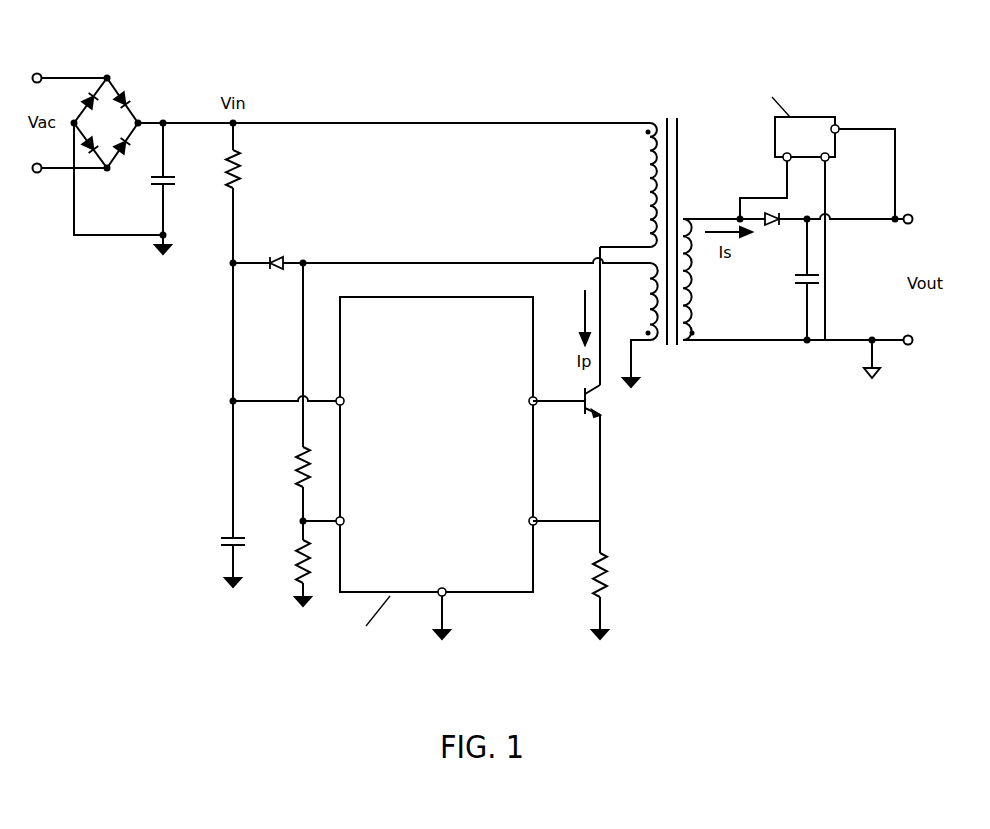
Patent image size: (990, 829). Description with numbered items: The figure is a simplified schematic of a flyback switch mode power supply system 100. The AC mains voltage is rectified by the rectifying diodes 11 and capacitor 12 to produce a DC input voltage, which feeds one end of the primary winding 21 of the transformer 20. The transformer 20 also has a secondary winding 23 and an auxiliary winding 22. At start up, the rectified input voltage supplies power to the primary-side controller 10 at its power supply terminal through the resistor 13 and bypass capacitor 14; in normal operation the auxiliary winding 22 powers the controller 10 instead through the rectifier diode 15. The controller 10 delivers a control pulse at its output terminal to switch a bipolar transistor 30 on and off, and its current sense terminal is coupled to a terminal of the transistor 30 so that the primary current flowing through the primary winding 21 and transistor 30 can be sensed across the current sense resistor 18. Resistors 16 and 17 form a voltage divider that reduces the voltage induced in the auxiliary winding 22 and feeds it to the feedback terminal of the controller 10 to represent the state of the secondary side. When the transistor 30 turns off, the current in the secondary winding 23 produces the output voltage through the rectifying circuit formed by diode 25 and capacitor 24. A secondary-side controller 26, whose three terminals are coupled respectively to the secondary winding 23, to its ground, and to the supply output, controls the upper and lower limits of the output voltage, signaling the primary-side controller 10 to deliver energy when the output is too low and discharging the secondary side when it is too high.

The fly back switch mode power supply system 100 is at (888, 68).
The primary-side controller 10 is at (410, 486).
The rectifying diodes 11 is at (131, 87).
The capacitor 12 is at (180, 178).
The resistor 13 is at (247, 167).
The bypass capacitor 14 is at (215, 548).
The rectifier diode 15 is at (270, 277).
The resistor 16 is at (290, 460).
The resistor 17 is at (290, 550).
The current sense resistor 18 is at (617, 583).
The transformer 20 is at (754, 253).
The primary winding 21 is at (643, 173).
The auxiliary winding 22 is at (650, 285).
The secondary winding 23 is at (697, 268).
The capacitor 24 is at (792, 283).
The diode 25 is at (769, 233).
The secondary-side controller 26 is at (803, 195).
The bipolar transistor 30 is at (618, 412).